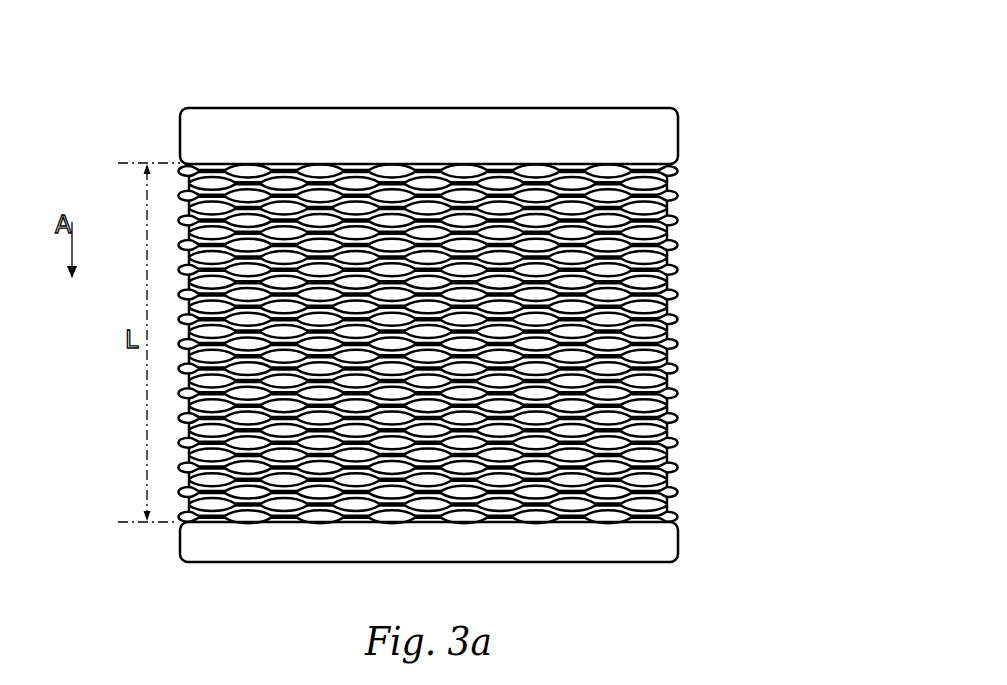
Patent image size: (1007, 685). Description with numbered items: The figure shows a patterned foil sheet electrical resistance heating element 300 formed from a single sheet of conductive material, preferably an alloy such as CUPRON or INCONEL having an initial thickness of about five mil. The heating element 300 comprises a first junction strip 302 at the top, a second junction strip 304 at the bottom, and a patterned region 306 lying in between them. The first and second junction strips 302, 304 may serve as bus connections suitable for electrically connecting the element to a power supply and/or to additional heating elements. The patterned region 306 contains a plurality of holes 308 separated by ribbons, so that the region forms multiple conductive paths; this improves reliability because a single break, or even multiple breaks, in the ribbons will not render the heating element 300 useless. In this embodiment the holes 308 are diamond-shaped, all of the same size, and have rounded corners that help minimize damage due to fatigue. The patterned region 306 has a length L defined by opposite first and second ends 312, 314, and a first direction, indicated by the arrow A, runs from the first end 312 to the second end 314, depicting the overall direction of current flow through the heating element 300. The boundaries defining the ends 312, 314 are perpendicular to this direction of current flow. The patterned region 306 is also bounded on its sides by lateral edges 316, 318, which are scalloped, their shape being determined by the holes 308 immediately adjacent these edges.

The patterned foil sheet electrical resistance heating element 300 is at (91, 38).
The first junction strip 302 is at (577, 130).
The second junction strip 304 is at (652, 546).
The patterned region 306 is at (680, 197).
The holes 308 is at (677, 288).
The first end 312 is at (246, 162).
The second end 314 is at (236, 523).
The lateral edge 316 is at (177, 408).
The lateral edge 318 is at (680, 383).